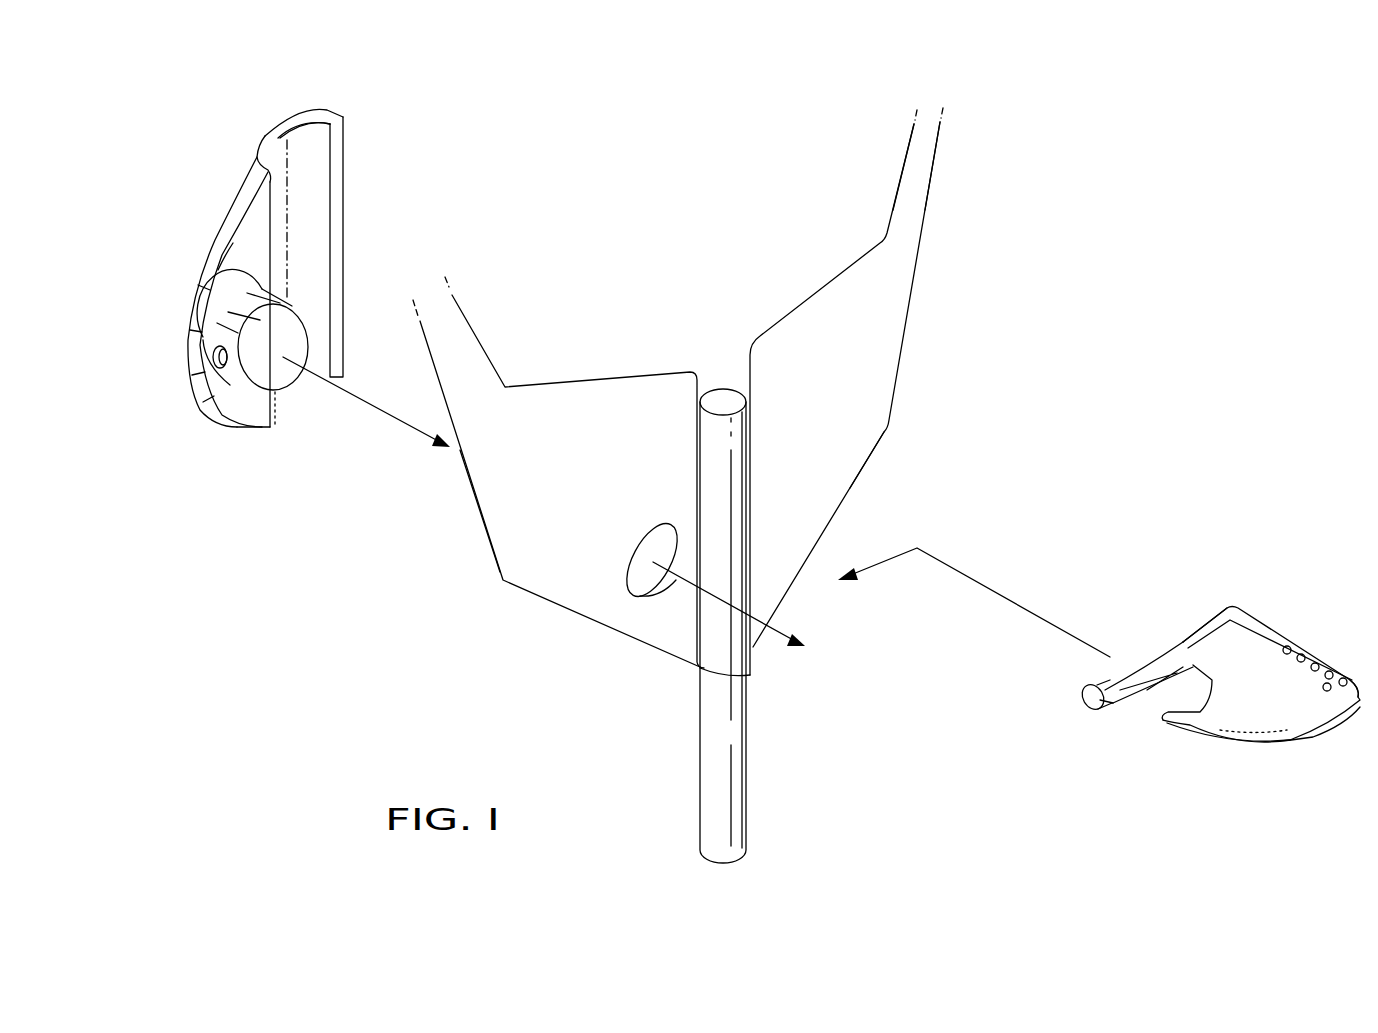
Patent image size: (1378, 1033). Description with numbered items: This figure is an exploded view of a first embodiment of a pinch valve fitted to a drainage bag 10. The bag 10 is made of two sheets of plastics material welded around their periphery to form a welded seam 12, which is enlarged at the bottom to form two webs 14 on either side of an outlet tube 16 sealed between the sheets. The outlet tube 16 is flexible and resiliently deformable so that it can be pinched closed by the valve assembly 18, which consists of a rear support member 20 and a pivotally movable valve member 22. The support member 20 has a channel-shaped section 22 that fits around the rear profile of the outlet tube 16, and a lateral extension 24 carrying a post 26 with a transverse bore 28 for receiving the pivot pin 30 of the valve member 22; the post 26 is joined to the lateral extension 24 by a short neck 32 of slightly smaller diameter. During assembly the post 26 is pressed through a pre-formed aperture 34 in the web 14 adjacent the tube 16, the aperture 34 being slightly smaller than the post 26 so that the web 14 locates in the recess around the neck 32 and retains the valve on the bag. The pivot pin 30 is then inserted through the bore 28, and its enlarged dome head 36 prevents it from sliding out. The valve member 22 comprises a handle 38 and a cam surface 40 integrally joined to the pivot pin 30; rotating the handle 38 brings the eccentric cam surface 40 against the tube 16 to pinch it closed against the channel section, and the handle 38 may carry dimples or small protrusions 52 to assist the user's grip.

The drainage bag 10 is at (880, 341).
The welded seam 12 is at (932, 163).
The webs 14 is at (545, 555).
The outlet tube 16 is at (742, 735).
The valve assembly 18 is at (552, 755).
The rear support member 20 is at (192, 203).
The valve member 22 is at (278, 135).
The lateral extension 24 is at (233, 243).
The post 26 is at (263, 380).
The transverse bore 28 is at (213, 363).
The pivot pin 30 is at (1118, 678).
The neck 32 is at (217, 303).
The aperture 34 is at (640, 585).
The dome head 36 is at (1095, 710).
The handle 38 is at (1262, 662).
The cam surface 40 is at (1175, 637).
The dimples or small protrusions 52 is at (1358, 700).